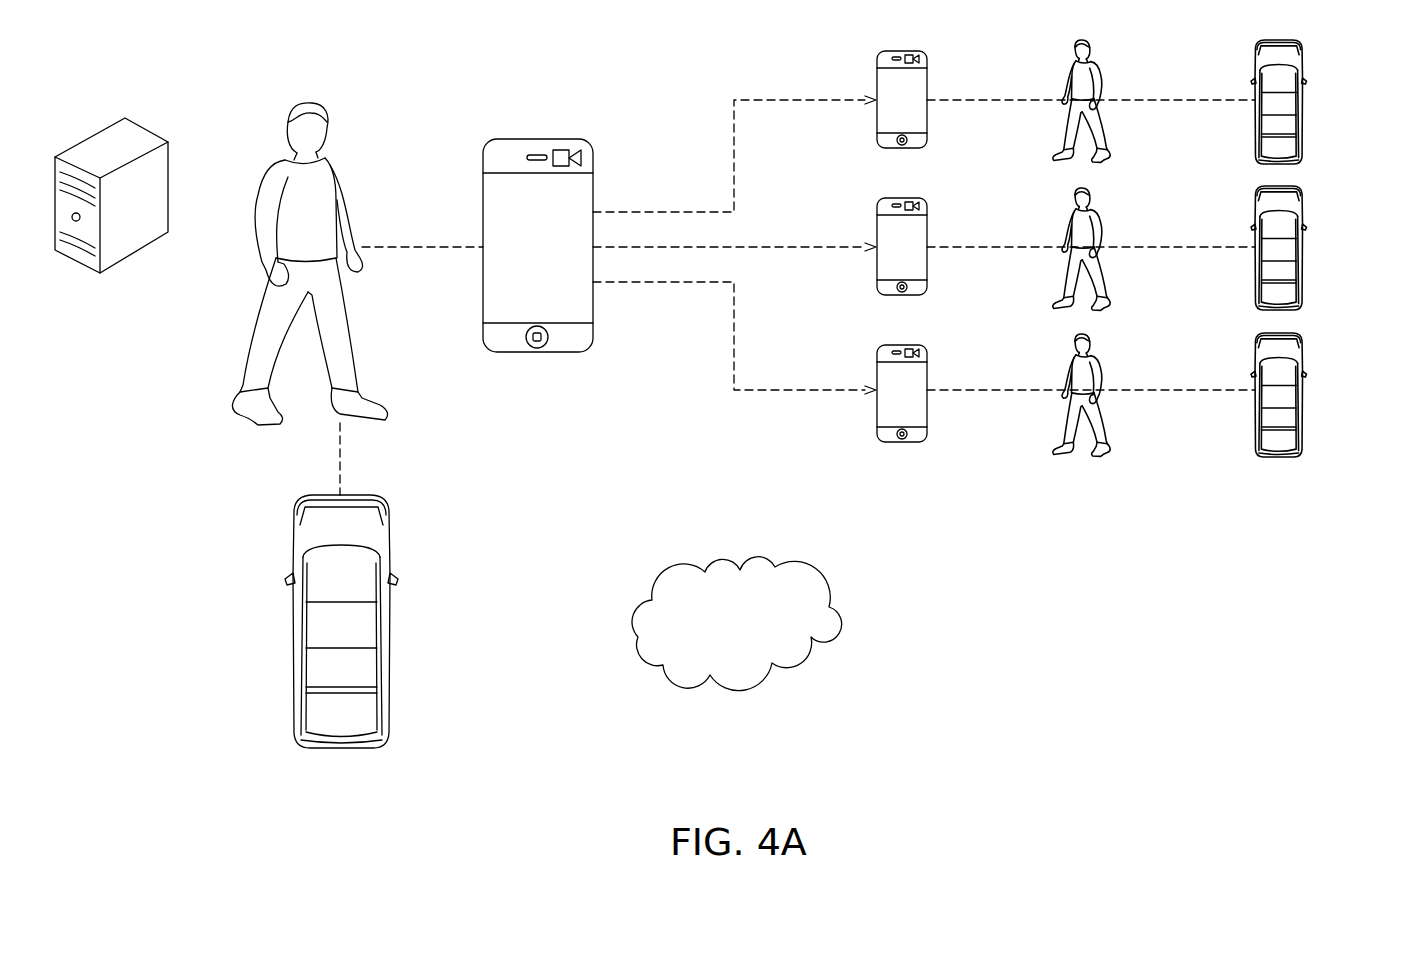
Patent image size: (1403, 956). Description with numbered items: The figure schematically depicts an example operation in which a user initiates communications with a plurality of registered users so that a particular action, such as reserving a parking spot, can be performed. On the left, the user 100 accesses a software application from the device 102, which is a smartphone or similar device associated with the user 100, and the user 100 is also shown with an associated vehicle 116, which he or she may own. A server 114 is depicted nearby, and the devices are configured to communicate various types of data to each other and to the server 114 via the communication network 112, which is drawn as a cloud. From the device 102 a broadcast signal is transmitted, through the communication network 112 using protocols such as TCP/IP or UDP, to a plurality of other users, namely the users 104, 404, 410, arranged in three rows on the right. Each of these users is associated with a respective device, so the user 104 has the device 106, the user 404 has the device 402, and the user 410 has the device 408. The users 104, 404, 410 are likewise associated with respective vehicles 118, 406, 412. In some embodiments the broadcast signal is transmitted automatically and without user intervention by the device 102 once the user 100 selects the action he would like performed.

The user 100 is at (258, 255).
The device 102 is at (538, 139).
The user 104 is at (1100, 72).
The device 106 is at (927, 72).
The communication network 112 is at (758, 552).
The server 114 is at (146, 125).
The vehicle 116 is at (293, 618).
The vehicle 118 is at (1303, 72).
The device 402 is at (927, 218).
The user 404 is at (1100, 218).
The vehicle 406 is at (1303, 218).
The device 408 is at (927, 364).
The user 410 is at (1100, 364).
The vehicle 412 is at (1303, 364).